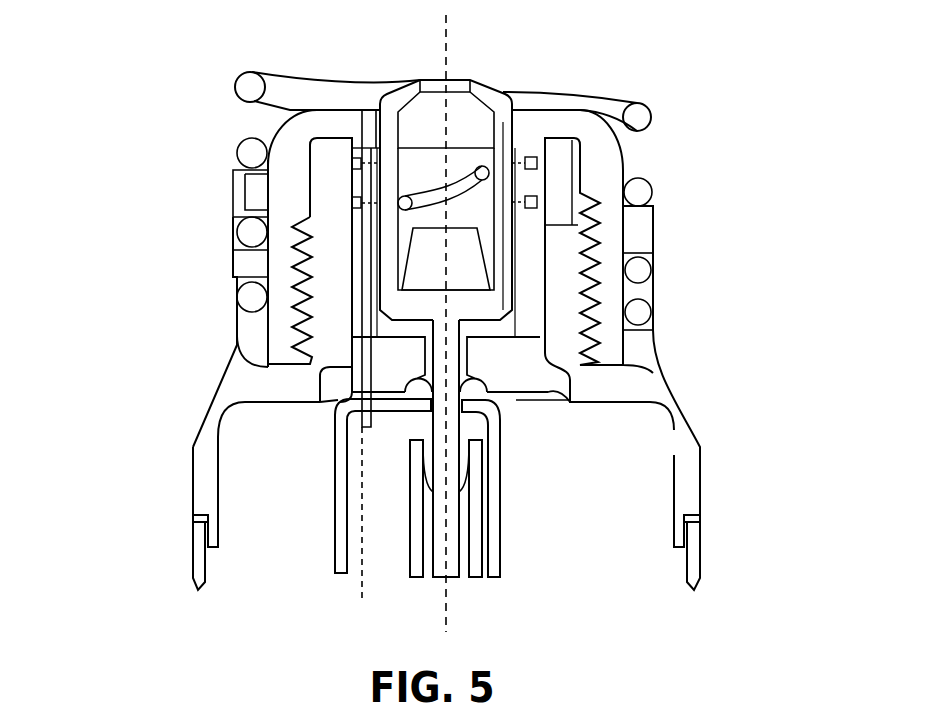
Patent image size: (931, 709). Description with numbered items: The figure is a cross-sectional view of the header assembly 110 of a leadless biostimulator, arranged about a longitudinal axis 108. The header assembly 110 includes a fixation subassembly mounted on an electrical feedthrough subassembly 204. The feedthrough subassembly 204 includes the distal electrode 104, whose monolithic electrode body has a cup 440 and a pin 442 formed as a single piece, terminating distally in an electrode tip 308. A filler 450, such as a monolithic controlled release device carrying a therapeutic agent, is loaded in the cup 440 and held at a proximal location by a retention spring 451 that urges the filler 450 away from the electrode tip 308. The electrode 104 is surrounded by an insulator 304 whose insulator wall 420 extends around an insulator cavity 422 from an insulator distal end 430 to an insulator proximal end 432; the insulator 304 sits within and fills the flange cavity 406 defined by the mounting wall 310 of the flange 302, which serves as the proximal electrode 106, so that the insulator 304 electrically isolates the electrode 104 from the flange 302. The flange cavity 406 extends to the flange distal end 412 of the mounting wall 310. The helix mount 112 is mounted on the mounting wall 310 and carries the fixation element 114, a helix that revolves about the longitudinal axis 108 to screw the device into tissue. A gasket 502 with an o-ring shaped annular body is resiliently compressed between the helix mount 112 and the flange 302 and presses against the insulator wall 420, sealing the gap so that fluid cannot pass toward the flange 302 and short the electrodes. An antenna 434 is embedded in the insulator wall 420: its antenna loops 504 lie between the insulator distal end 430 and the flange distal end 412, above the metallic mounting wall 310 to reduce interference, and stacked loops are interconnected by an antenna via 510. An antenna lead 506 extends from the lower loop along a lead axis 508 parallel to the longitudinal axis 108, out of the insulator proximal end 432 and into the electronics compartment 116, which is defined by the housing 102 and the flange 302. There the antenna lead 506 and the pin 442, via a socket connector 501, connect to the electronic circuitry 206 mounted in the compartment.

The header assembly 110 is at (208, 49).
The longitudinal axis 108 is at (447, 53).
The electrode 104 is at (480, 92).
The electrode tip 308 is at (480, 92).
The cup 440 is at (503, 137).
The filler 450 is at (415, 272).
The insulator distal end 430 is at (362, 145).
The antenna loops 504 is at (543, 200).
The antenna 434 is at (540, 160).
The insulator cavity 422 is at (387, 325).
The flange distal end 412 is at (295, 214).
The electrical feedthrough subassembly 204 is at (195, 434).
The electronics compartment 116 is at (233, 503).
The gasket 502 is at (327, 160).
The antenna via 510 is at (243, 176).
The fixation element 114 is at (640, 118).
The retention spring 451 is at (585, 128).
The insulator wall 420 is at (652, 190).
The helix mount 112 is at (640, 233).
The mounting wall 310 is at (650, 272).
The insulator 304 is at (648, 313).
The proximal electrode 106 is at (643, 382).
The flange 302 is at (643, 382).
The housing 102 is at (690, 549).
The flange cavity 406 is at (518, 397).
The insulator proximal end 432 is at (553, 400).
The pin 442 is at (452, 449).
The socket connector 501 is at (477, 517).
The electronic circuitry 206 is at (335, 470).
The antenna lead 506 is at (337, 394).
The lead axis 508 is at (362, 572).